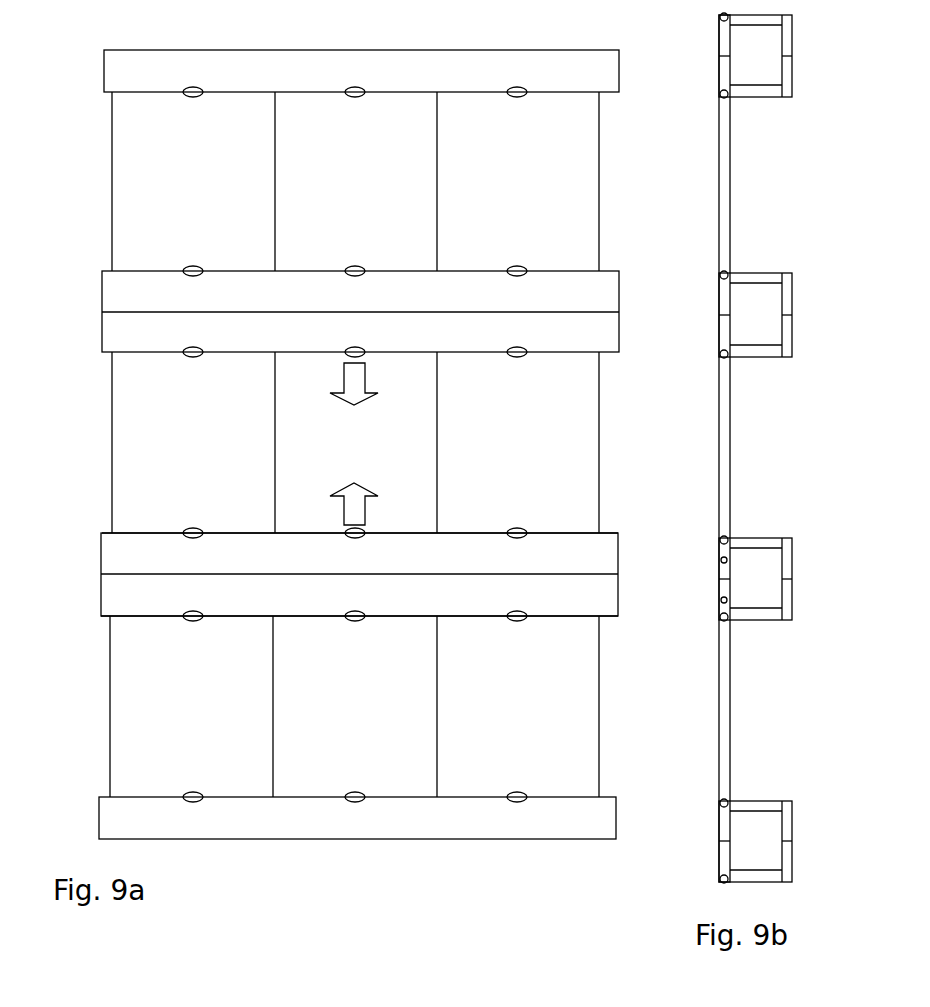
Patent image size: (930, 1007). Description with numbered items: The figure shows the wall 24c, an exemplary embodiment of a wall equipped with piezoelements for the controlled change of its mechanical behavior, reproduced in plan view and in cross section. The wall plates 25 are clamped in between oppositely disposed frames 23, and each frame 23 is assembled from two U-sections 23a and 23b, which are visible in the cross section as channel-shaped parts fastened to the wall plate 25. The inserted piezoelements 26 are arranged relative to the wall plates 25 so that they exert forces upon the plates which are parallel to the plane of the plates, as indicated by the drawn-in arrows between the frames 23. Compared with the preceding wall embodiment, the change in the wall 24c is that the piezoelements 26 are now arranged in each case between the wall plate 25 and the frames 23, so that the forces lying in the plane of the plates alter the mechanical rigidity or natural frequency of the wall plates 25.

In FIG. 9A, the frame 23 is at (93, 268).
In FIG. 9A, the U-section 23a is at (716, 556).
In FIG. 9B, the U-section 23a is at (755, 185).
In FIG. 9A, the U-section 23b is at (716, 600).
In FIG. 9B, the U-section 23b is at (755, 709).
In FIG. 9A, the wall 24c is at (520, 858).
In FIG. 9A, the wall plate 25 is at (528, 202).
In FIG. 9B, the wall plate 25 is at (723, 190).
In FIG. 9A, the piezoelement 26 is at (188, 620).
In FIG. 9B, the piezoelement 26 is at (724, 580).